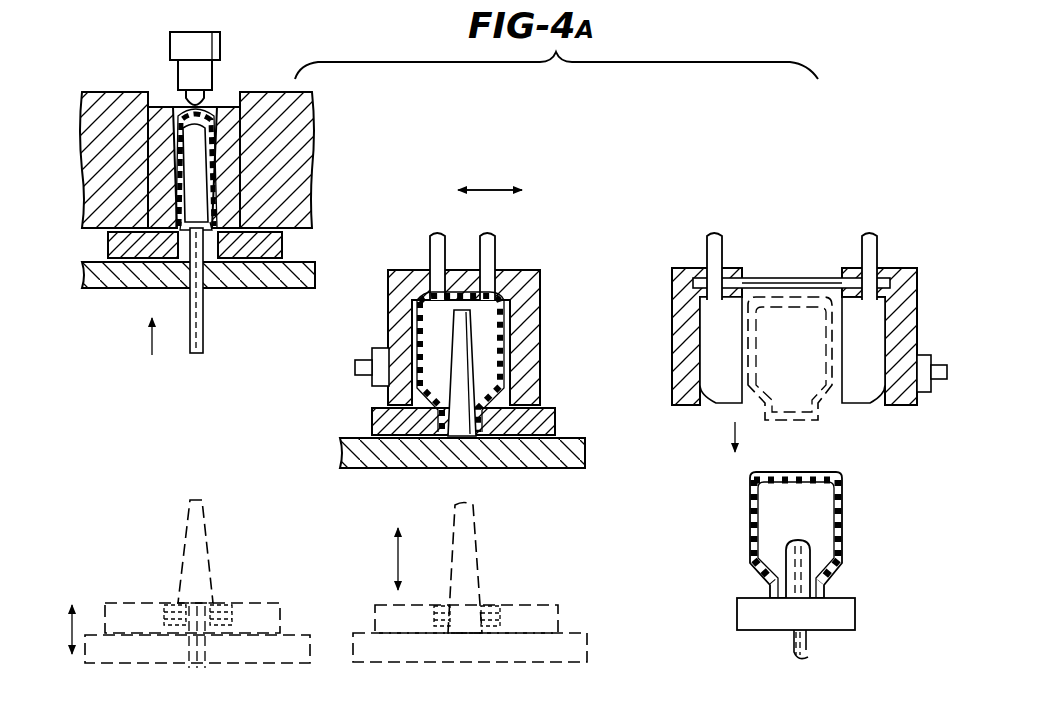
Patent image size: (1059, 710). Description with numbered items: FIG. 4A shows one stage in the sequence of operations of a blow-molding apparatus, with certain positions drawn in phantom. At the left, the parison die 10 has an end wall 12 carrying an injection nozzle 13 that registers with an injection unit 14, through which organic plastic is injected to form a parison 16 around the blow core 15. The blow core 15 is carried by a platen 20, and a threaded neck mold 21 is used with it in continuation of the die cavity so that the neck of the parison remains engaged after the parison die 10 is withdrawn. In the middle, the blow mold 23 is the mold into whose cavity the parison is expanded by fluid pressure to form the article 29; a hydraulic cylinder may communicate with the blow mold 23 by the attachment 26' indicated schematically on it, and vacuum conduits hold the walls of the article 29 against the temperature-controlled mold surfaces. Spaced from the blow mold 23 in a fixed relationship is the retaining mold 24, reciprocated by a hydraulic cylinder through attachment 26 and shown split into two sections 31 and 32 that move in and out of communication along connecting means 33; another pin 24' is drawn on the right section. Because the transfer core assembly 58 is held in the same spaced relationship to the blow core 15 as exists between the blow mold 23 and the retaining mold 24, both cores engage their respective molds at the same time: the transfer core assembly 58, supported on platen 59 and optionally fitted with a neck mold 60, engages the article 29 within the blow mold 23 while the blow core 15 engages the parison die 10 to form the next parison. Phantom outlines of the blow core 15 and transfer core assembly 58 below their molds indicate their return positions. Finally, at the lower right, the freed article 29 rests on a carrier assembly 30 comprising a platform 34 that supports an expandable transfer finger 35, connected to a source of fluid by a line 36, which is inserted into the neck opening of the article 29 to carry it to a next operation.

The parison die 10 is at (145, 145).
The end wall 12 is at (160, 110).
The injection nozzle 13 is at (210, 100).
The injection unit 14 is at (210, 48).
The blow core 15 is at (134, 292).
The parison 16 is at (210, 152).
The platen 20 is at (262, 282).
The neck mold 21 is at (275, 244).
The blow mold 23 is at (512, 272).
The retaining mold 24 is at (889, 313).
The pin 24' is at (882, 238).
The attachment 26 is at (941, 361).
The attachment 26' is at (365, 348).
The article 29 is at (505, 356).
The carrier assembly 30 is at (856, 598).
The retaining mold section 31 is at (690, 274).
The retaining mold section 32 is at (852, 270).
The connecting means 33 is at (786, 278).
The platform 34 is at (842, 620).
The expandable transfer finger 35 is at (805, 570).
The line 36 is at (790, 652).
The transfer core assembly 58 is at (522, 466).
The platen 59 is at (585, 446).
The neck mold 60 is at (555, 420).